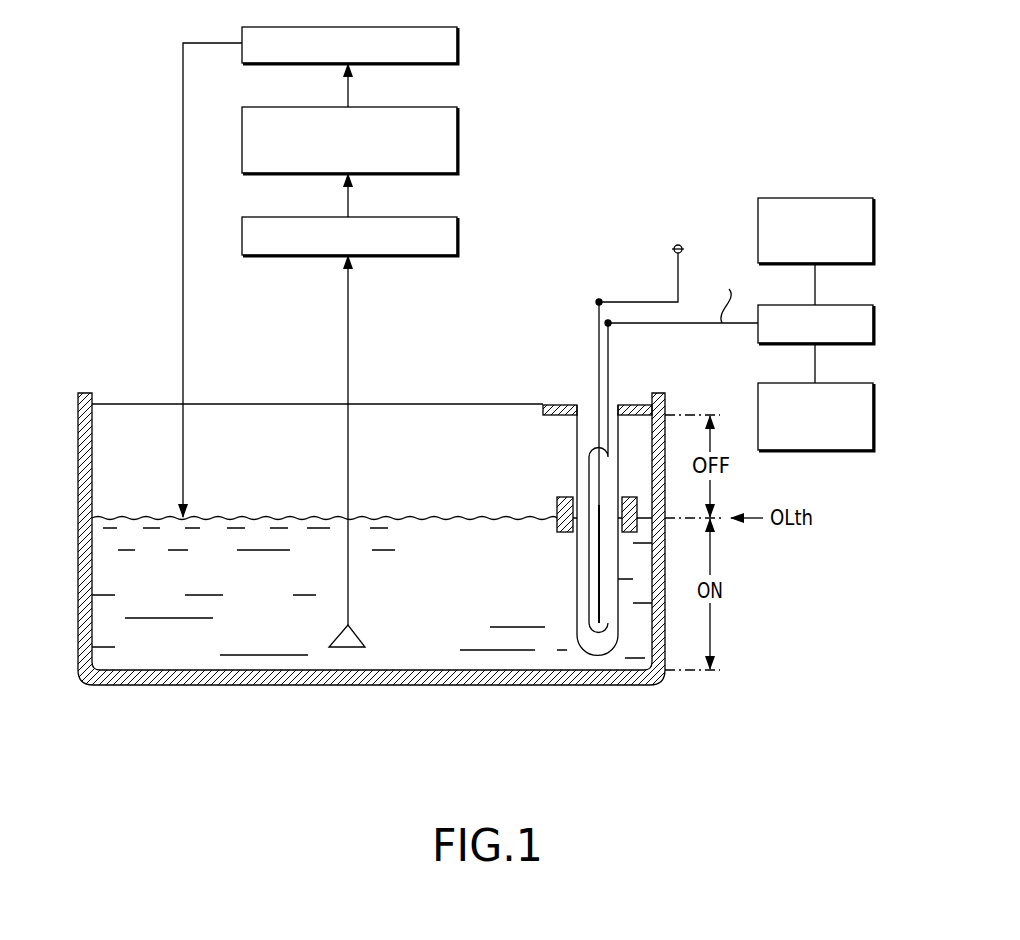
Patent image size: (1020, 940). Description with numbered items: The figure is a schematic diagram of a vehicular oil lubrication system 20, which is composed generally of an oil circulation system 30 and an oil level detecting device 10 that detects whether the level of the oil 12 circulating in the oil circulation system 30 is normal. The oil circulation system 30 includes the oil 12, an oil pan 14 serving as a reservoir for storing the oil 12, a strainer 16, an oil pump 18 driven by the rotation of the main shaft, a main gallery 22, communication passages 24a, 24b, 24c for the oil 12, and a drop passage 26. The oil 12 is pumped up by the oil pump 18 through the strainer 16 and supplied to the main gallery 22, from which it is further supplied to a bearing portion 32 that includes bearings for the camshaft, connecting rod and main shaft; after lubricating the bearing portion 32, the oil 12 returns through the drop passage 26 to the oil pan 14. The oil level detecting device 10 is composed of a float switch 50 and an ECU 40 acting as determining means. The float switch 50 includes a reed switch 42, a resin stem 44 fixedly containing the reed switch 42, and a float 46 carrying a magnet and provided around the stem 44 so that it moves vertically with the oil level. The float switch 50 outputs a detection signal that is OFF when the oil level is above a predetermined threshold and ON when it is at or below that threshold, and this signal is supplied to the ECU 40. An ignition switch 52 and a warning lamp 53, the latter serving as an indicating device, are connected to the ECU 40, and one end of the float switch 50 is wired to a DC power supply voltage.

The oil level detecting device 10 is at (640, 215).
The oil 12 is at (238, 517).
The oil pan 14 is at (500, 685).
The strainer 16 is at (360, 630).
The oil pump 18 is at (457, 236).
The vehicular oil lubrication system 20 is at (713, 32).
The main gallery 22 is at (457, 134).
The communication passage 24a is at (348, 456).
The communication passage 24b is at (348, 200).
The communication passage 24c is at (348, 88).
The drop passage 26 is at (183, 194).
The oil circulation system 30 is at (497, 82).
The bearing portion 32 is at (457, 41).
The ECU 40 is at (840, 305).
The reed switch 42 is at (494, 530).
The resin stem 44 is at (567, 541).
The float 46 is at (535, 526).
The float switch 50 is at (545, 560).
The ignition switch 52 is at (860, 451).
The warning lamp 53 is at (838, 198).